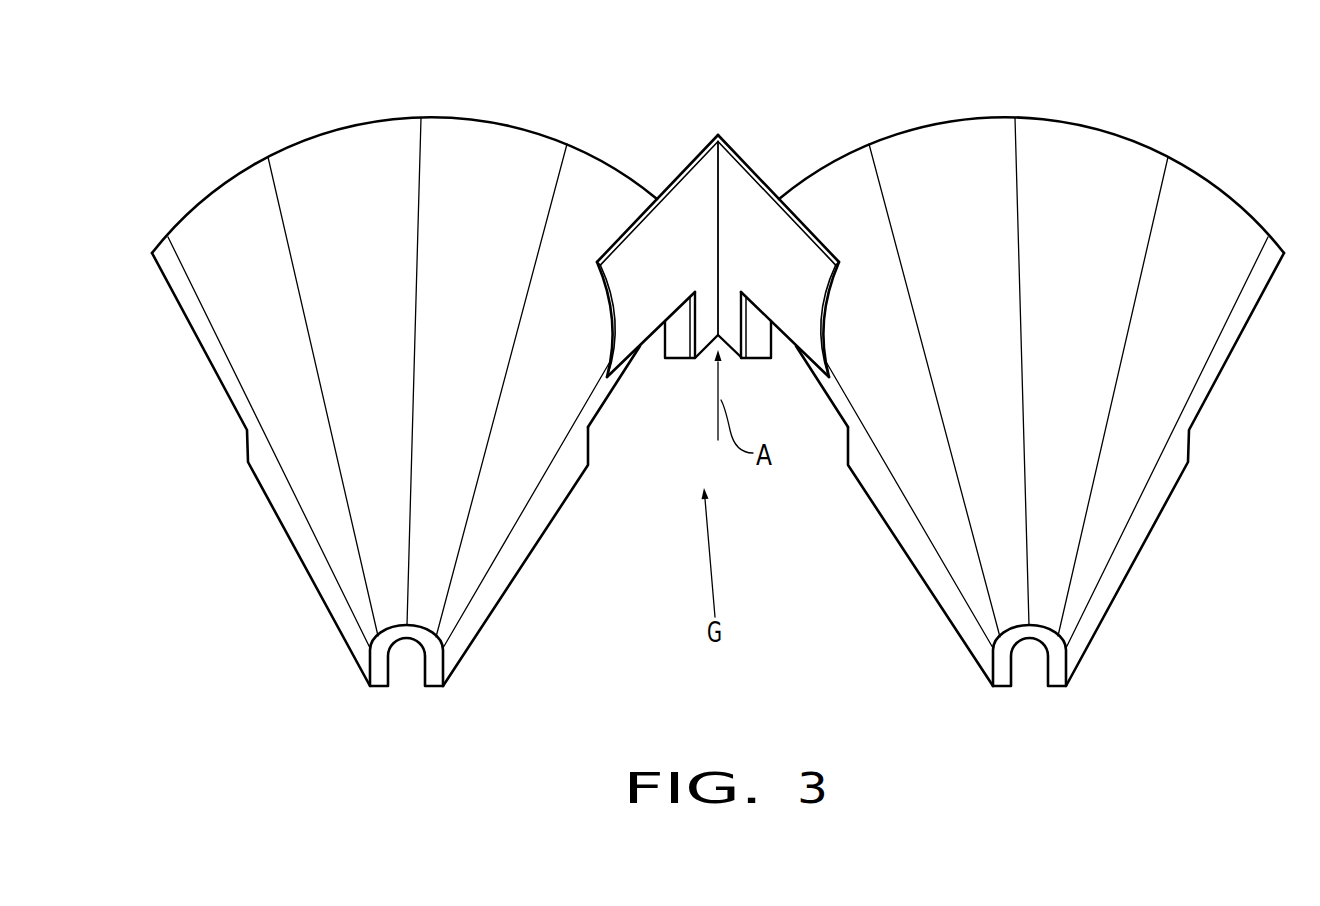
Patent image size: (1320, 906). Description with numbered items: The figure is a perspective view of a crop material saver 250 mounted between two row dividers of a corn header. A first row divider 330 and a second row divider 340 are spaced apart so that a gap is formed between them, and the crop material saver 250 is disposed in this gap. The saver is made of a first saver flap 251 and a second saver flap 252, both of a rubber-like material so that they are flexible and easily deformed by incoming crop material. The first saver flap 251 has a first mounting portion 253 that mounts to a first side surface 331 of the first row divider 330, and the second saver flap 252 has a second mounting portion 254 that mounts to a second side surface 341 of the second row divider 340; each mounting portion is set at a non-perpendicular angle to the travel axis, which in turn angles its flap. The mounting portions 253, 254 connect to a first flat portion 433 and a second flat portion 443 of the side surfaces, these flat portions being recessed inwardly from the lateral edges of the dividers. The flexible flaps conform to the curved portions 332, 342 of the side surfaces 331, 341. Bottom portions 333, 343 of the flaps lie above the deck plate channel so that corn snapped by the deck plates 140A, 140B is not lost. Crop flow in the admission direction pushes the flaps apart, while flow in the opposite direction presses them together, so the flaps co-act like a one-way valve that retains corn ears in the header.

The crop material saver 250 is at (728, 121).
The first saver flap 251 is at (670, 223).
The second saver flap 252 is at (767, 223).
The first mounting portion 253 is at (619, 363).
The second mounting portion 254 is at (822, 361).
The first row divider 330 is at (395, 599).
The first side surface 331 is at (520, 490).
The curved portion of first side surface 332 is at (503, 147).
The bottom portion of first saver flap 333 is at (720, 288).
The second row divider 340 is at (1100, 584).
The second side surface 341 is at (945, 515).
The curved portion of second side surface 342 is at (935, 257).
The bottom portion of second saver flap 343 is at (732, 315).
The first flat portion 433 is at (600, 403).
The second flat portion 443 is at (848, 408).
The deck plate 140A is at (652, 358).
The deck plate 140B is at (772, 351).